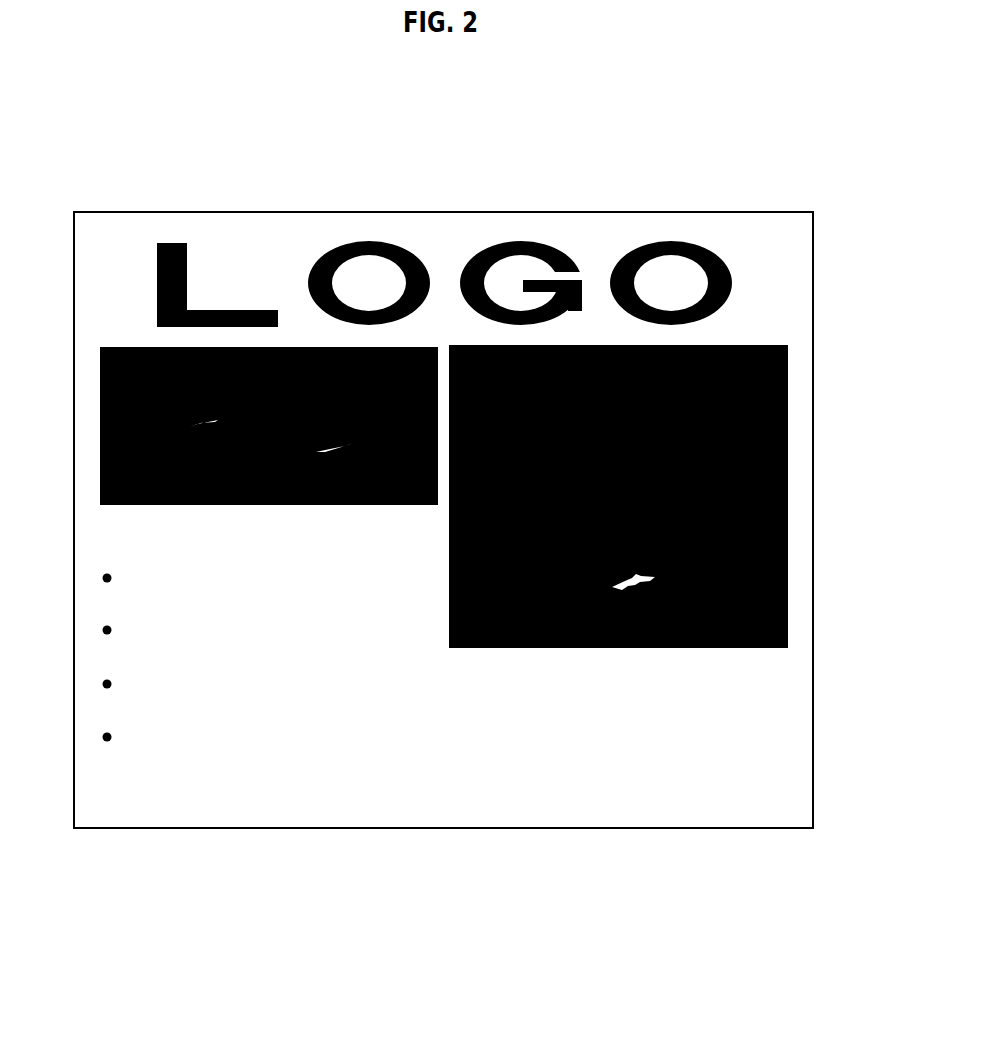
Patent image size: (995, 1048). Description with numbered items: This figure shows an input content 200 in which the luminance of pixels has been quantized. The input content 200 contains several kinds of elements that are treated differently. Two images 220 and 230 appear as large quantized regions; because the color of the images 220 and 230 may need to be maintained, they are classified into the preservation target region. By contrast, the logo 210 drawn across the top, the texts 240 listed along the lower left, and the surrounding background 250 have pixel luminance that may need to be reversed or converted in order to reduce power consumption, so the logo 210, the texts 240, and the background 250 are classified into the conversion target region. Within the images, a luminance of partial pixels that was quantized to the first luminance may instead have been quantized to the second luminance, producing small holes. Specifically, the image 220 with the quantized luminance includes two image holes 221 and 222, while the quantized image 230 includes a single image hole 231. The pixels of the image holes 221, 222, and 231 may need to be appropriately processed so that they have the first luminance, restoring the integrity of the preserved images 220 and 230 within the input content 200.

The input content 200 is at (108, 212).
The logo 210 is at (745, 210).
The image 220 is at (100, 423).
The image hole 221 is at (100, 405).
The image hole 222 is at (336, 505).
The image 230 is at (788, 460).
The image hole 231 is at (788, 597).
The texts 240 is at (68, 553).
The background 250 is at (432, 818).